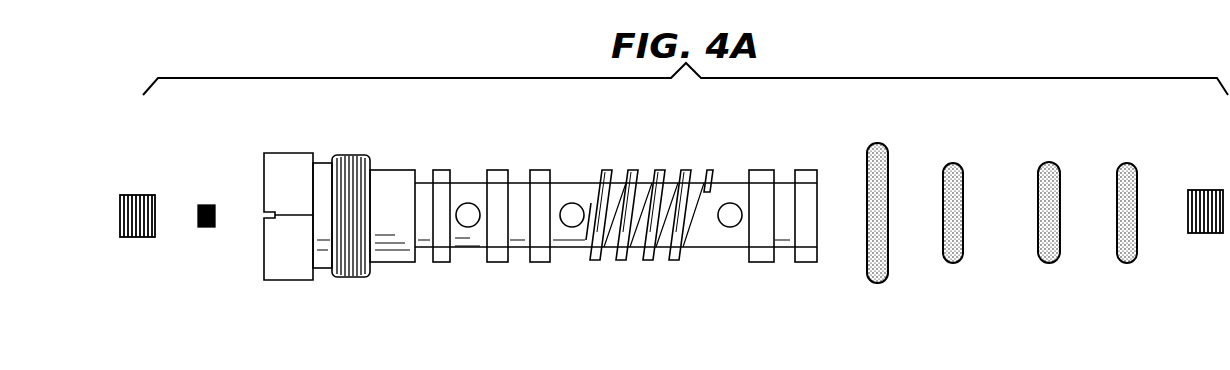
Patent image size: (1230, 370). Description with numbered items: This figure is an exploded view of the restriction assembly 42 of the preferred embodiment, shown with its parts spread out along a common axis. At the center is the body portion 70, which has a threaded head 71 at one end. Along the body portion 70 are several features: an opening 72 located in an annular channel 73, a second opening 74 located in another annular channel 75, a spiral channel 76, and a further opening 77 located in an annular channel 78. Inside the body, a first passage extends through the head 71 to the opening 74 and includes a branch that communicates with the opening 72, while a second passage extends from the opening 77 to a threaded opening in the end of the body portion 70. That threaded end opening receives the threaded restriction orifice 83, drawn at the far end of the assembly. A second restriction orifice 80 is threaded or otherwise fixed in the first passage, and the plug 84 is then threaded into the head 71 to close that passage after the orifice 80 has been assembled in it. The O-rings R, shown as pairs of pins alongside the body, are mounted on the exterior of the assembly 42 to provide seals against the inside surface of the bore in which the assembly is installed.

The restriction assembly 42 is at (413, 303).
The body portion 70 is at (392, 172).
The threaded head 71 is at (313, 168).
The opening 72 is at (468, 203).
The annular channel 73 is at (486, 262).
The opening 74 is at (572, 203).
The annular channel 75 is at (565, 250).
The spiral channel 76 is at (645, 173).
The opening 77 is at (733, 228).
The annular channel 78 is at (750, 175).
The second restriction orifice 80 is at (207, 205).
The threaded restriction orifice 83 is at (1200, 190).
The plug 84 is at (135, 195).
The O-rings R is at (942, 165).